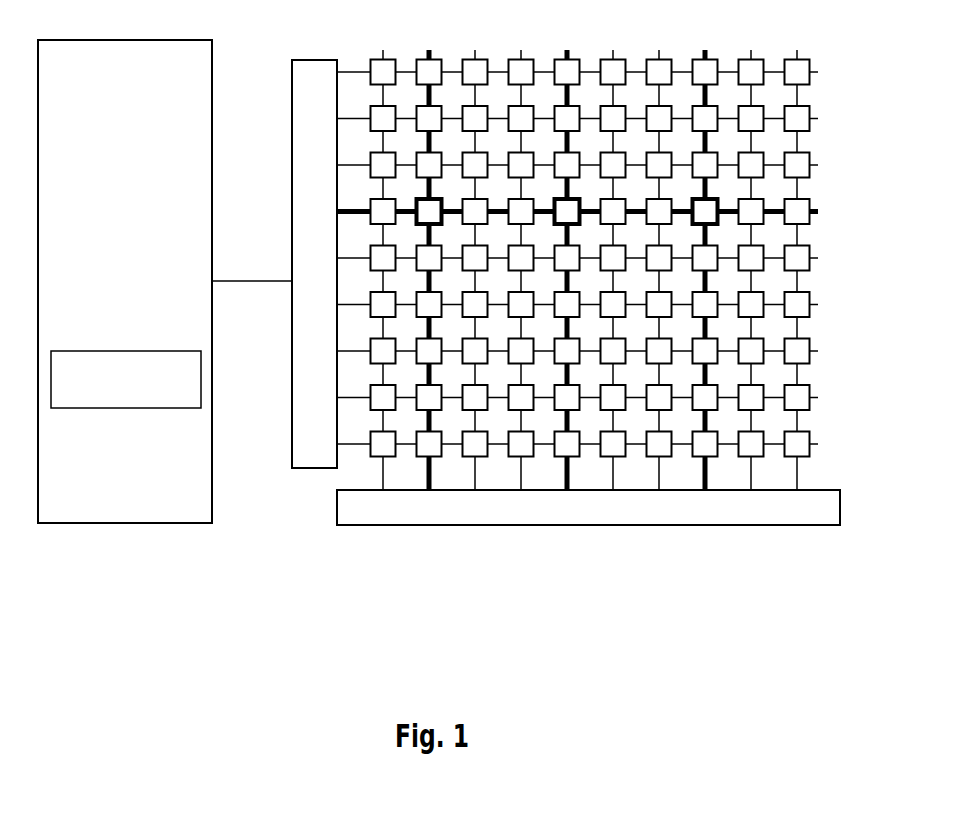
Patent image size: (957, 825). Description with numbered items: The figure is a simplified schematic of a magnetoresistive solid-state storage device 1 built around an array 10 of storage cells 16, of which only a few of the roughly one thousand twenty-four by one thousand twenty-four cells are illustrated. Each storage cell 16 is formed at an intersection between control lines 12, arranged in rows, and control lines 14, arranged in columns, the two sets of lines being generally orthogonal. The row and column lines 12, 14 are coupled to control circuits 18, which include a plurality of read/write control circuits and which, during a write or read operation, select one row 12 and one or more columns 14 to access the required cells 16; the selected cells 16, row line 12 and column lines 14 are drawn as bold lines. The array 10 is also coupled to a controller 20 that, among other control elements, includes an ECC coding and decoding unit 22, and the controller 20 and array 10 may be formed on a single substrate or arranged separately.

The magnetoresistive solid-state storage device 1 is at (333, 568).
The array 10 is at (612, 248).
The control lines (rows) 12 is at (818, 210).
The control lines (columns) 14 is at (565, 50).
The storage cells 16 is at (795, 73).
The control circuits 18 is at (325, 60).
The controller 20 is at (130, 523).
The ECC coding and decoding unit 22 is at (119, 351).